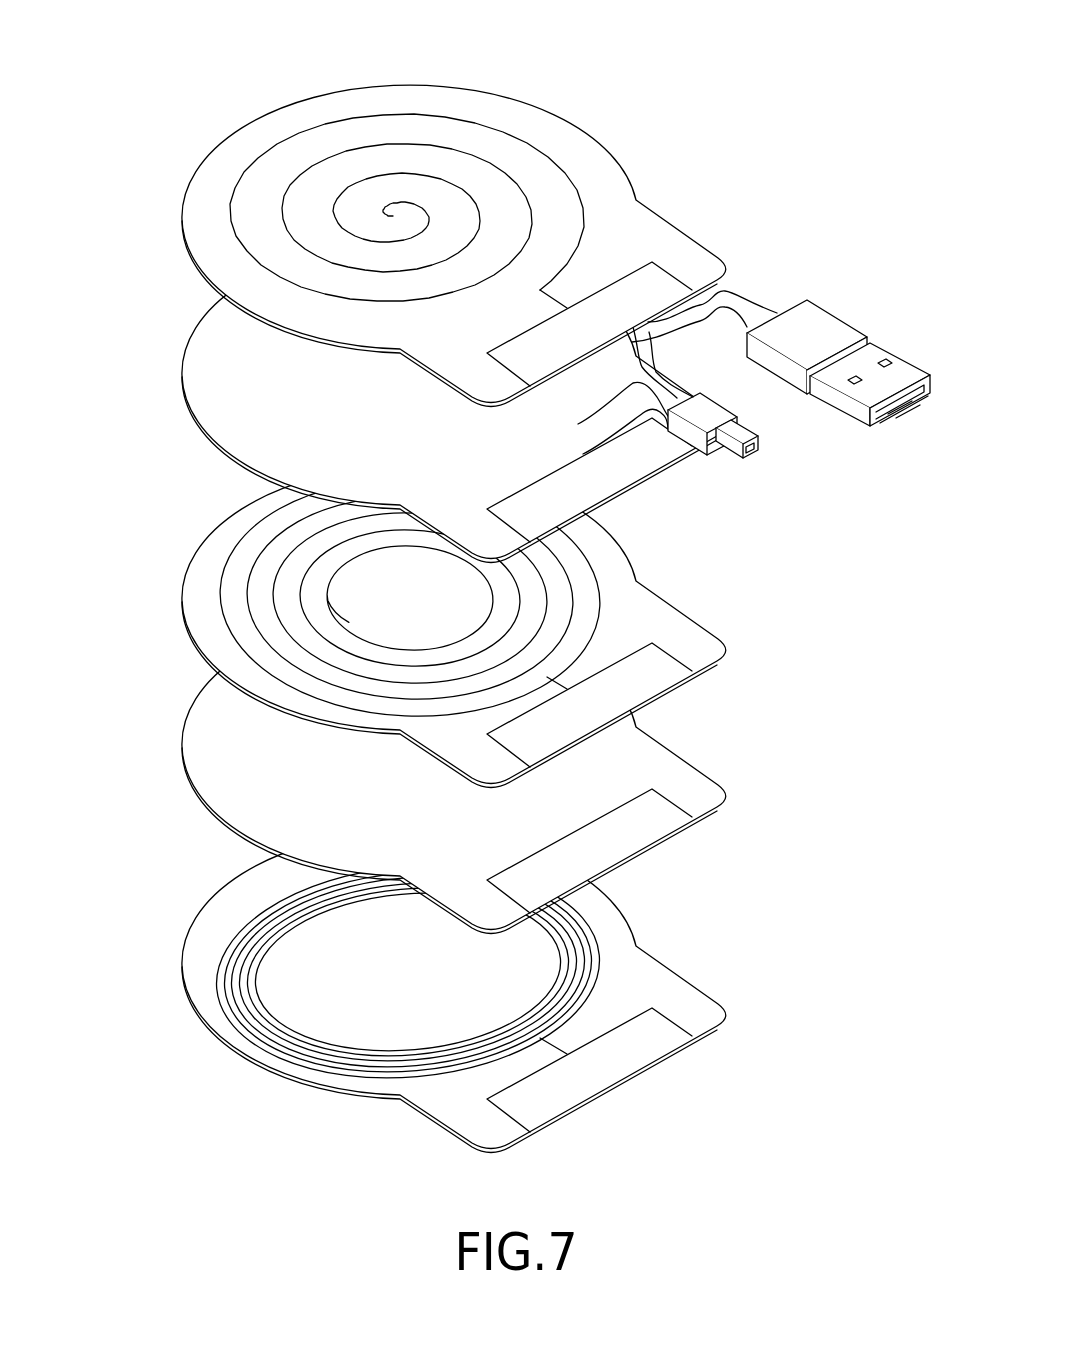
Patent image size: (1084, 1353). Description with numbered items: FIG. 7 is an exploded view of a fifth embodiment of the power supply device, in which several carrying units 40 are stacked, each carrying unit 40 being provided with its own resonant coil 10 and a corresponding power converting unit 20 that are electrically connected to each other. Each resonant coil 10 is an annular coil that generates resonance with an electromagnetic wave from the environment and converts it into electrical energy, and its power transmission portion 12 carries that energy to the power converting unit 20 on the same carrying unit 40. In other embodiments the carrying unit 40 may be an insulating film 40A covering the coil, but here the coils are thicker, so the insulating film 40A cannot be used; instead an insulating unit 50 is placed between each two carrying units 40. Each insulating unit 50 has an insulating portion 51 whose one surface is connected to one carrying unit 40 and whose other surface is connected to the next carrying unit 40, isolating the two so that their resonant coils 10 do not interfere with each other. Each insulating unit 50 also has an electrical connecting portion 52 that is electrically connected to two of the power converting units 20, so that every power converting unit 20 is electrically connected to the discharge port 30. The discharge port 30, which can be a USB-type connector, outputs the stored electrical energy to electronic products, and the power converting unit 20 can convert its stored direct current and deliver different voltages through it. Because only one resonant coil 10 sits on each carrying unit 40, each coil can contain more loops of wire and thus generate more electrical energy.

The resonant coil 10 is at (387, 124).
The power transmission portion 12 is at (640, 200).
The power converting unit 20 is at (665, 290).
The discharge port 30 is at (871, 318).
The carrying unit 40 is at (397, 604).
The insulating film 40A is at (565, 135).
The insulating unit 50 is at (439, 570).
The insulating portion 51 is at (205, 385).
The electrical connecting portion 52 is at (640, 460).